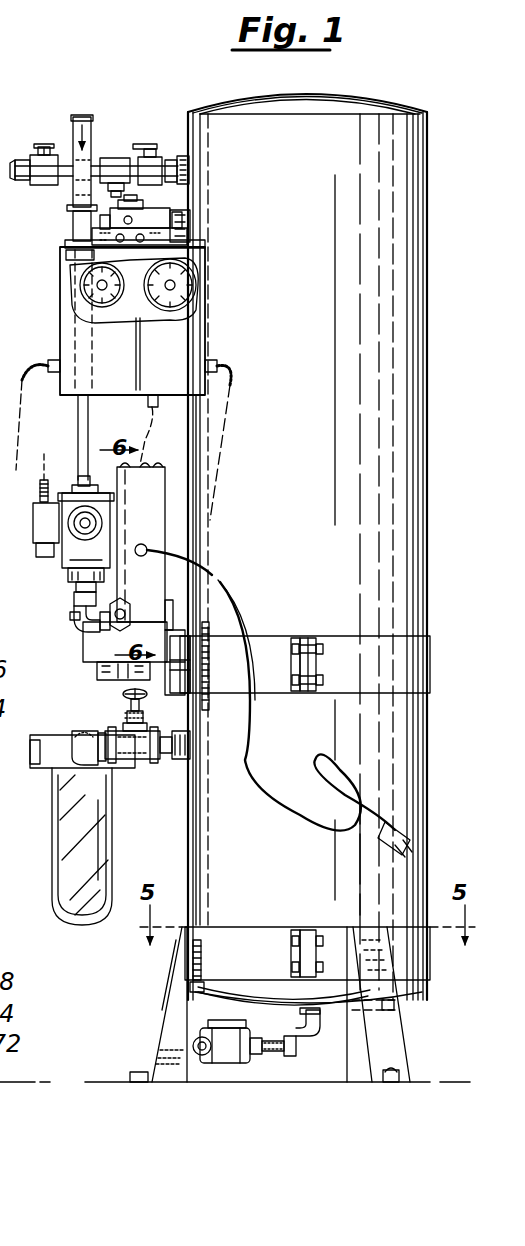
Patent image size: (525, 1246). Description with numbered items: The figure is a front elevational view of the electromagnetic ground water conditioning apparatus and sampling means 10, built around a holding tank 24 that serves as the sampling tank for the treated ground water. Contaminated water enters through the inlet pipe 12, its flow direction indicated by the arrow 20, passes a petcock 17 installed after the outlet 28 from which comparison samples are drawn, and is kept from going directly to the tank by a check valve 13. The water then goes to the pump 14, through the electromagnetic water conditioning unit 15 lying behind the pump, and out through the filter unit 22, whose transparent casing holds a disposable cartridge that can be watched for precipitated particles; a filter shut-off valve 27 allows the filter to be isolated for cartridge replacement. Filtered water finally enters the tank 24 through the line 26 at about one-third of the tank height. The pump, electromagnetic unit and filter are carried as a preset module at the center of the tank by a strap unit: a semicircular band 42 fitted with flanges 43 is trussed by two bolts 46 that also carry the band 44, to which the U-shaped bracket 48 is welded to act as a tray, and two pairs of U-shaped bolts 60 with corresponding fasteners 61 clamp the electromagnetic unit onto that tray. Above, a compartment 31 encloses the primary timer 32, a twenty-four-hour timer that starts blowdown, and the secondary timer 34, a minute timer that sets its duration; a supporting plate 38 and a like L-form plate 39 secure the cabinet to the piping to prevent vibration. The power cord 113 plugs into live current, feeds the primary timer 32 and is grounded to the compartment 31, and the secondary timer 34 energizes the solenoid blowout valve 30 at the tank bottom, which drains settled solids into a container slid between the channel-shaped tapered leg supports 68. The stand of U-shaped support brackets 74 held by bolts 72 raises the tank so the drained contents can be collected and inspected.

The electromagnetic ground water conditioning apparatus and sampling means 10 is at (383, 88).
The inlet pipe 12 is at (95, 126).
The check valve 13 is at (145, 202).
The pump 14 is at (112, 520).
The electromagnetic water conditioning unit 15 is at (153, 500).
The petcock 17 is at (152, 162).
The arrow 20 is at (72, 136).
The filter unit 22 is at (54, 812).
The holding tank 24 is at (309, 284).
The line 26 is at (172, 758).
The filter shut-off valve 27 is at (143, 760).
The outlet 28 is at (180, 180).
The blowout valve 30 is at (230, 1066).
The compartment 31 is at (58, 318).
The primary timer 32 is at (84, 285).
The secondary timer 34 is at (182, 302).
The supporting plate 38 is at (186, 240).
The plate 39 is at (95, 242).
The semicircular band 42 is at (372, 648).
The flanges 43 is at (310, 692).
The band 44 is at (268, 640).
The bolts 46 is at (292, 642).
The U-shaped bracket 48 is at (172, 628).
The U-shaped bolts 60 is at (112, 650).
The fasteners 61 is at (103, 682).
The channel-shaped tapered leg supports 68 is at (160, 1008).
The bolts 72 is at (140, 1072).
The U-shaped support brackets 74 is at (202, 1000).
The power cord 113 is at (226, 588).